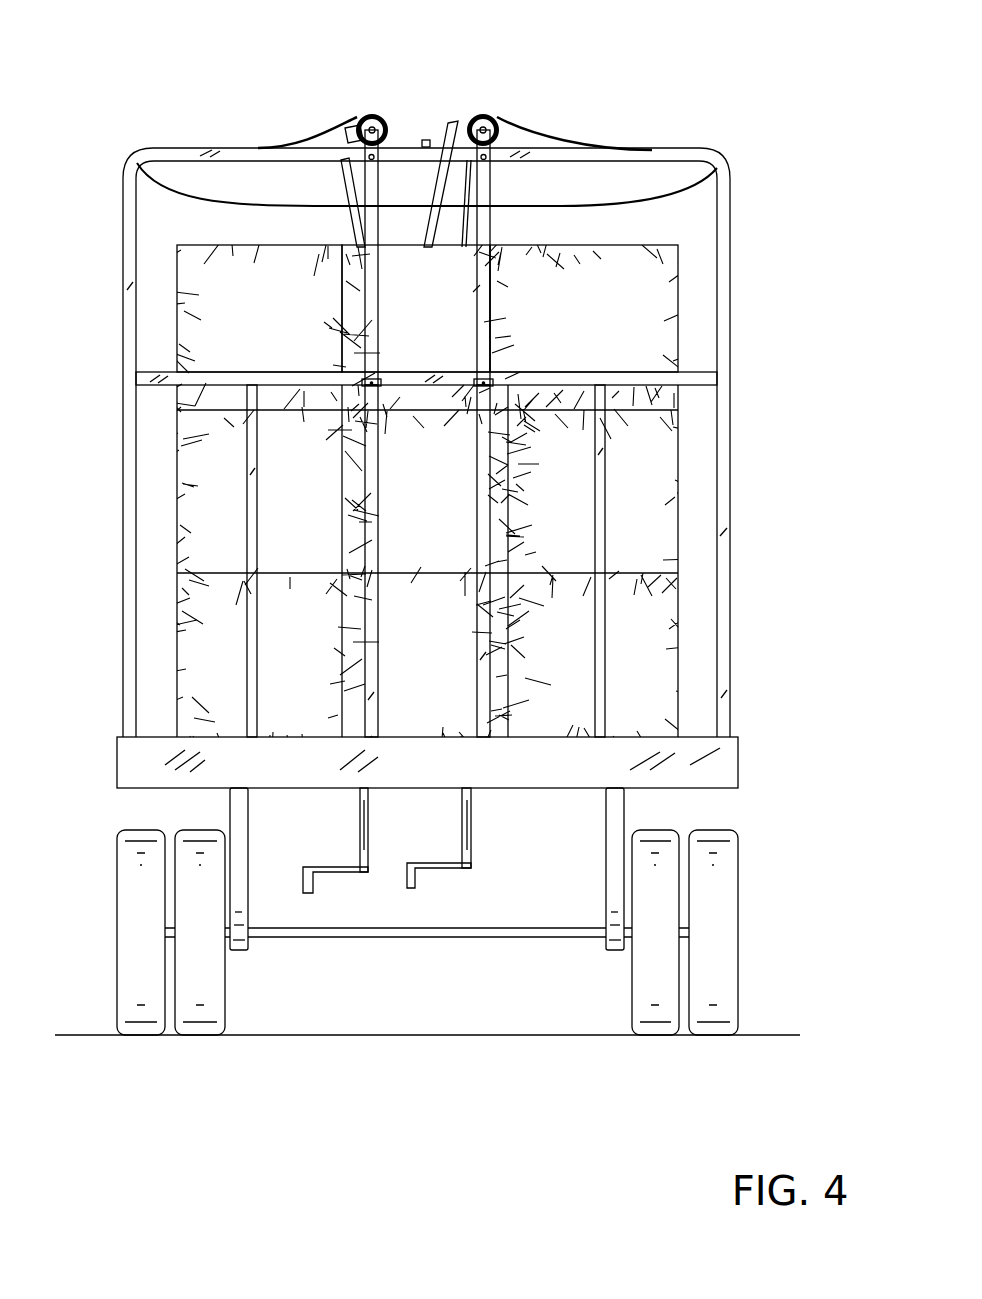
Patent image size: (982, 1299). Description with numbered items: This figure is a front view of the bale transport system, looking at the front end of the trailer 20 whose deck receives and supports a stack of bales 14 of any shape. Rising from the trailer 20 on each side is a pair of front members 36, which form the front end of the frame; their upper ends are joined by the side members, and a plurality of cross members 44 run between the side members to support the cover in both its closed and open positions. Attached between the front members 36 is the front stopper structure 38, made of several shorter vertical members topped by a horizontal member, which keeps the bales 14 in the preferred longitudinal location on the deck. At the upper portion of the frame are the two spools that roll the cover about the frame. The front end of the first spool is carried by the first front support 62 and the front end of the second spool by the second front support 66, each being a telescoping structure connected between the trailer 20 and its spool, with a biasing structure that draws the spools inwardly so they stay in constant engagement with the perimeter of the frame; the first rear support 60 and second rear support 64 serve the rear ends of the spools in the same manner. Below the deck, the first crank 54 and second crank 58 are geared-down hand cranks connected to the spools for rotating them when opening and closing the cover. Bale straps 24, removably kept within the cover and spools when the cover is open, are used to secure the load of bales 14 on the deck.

The bales 14 is at (657, 507).
The trailer 20 is at (732, 799).
The bale straps 24 is at (258, 147).
The front members 36 is at (130, 465).
The front stopper structure 38 is at (253, 550).
The cross members 44 is at (653, 153).
The first crank 54 is at (362, 828).
The second crank 58 is at (466, 830).
The first rear support 60 is at (347, 190).
The first front support 62 is at (373, 183).
The second rear support 64 is at (454, 124).
The second front support 66 is at (485, 190).